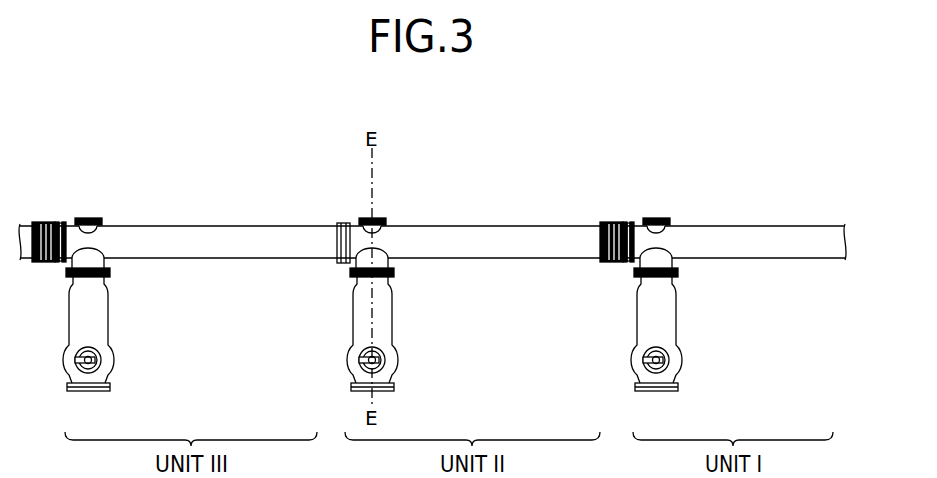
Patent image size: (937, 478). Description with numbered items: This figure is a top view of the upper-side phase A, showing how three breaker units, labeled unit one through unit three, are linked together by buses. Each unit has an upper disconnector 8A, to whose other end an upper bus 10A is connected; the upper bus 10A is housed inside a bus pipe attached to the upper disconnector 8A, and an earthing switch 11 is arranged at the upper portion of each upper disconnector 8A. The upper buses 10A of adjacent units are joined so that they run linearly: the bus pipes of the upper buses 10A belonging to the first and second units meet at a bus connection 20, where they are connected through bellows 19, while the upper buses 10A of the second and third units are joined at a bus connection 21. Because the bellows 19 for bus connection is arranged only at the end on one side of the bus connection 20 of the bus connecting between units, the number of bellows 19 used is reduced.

The upper bus 10A is at (240, 233).
The bellows 19 is at (45, 222).
The bus connection 20 is at (63, 222).
The bus connection 21 is at (343, 222).
The upper disconnector 8A is at (98, 311).
The earthing switch 11 is at (108, 360).